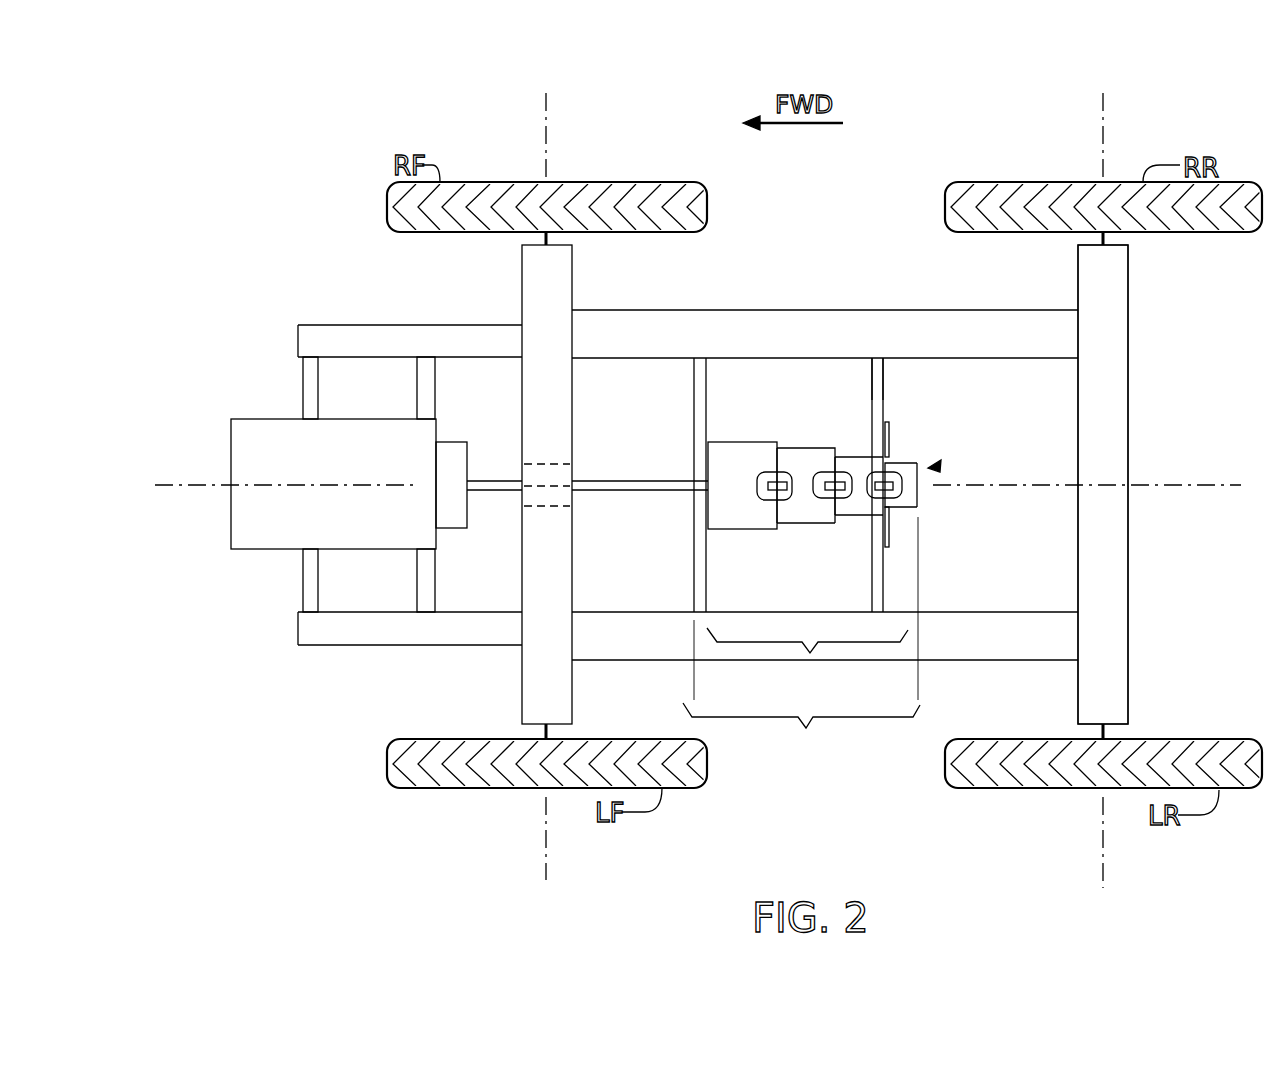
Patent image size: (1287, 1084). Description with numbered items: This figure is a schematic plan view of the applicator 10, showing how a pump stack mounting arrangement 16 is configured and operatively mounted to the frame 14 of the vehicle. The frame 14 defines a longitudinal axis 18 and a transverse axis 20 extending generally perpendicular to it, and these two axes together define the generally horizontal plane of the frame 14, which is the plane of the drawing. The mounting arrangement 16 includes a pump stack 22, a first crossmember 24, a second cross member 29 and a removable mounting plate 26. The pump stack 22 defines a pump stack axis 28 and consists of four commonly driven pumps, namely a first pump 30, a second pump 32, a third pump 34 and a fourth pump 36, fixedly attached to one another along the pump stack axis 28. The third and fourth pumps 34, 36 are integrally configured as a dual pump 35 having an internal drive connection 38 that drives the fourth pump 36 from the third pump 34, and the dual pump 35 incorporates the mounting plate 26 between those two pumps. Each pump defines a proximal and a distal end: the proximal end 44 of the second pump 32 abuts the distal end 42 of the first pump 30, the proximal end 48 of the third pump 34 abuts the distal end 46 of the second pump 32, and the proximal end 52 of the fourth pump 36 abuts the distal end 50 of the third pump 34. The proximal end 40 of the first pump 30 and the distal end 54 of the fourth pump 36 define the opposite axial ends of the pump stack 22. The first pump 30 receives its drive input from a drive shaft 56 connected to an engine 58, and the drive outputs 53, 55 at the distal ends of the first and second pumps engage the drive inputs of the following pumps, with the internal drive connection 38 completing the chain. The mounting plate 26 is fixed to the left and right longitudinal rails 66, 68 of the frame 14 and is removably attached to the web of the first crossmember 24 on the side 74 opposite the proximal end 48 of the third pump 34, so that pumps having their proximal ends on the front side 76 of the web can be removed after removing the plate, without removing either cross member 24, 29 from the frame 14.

The applicator 10 is at (953, 104).
The frame 14 is at (1111, 408).
The pump stack mounting arrangement 16 is at (801, 639).
The longitudinal axis 18 is at (195, 485).
The transverse axis 20 is at (1105, 839).
The pump stack 22 is at (812, 653).
The first crossmember 24 is at (878, 592).
The removable mounting plate 26 is at (888, 505).
The pump stack axis 28 is at (1037, 483).
The second cross member 29 is at (700, 548).
The first pump 30 is at (728, 532).
The second pump 32 is at (823, 455).
The third pump 34 is at (857, 517).
The dual pump 35 is at (938, 465).
The fourth pump 36 is at (903, 497).
The internal drive connection 38 is at (898, 467).
The proximal end of first pump 40 is at (703, 461).
The distal end of first pump 42 is at (780, 470).
The proximal end of second pump 44 is at (777, 460).
The distal end of second pump 46 is at (837, 465).
The proximal end of third pump 48 is at (810, 553).
The distal end of third pump 50 is at (893, 460).
The proximal end of fourth pump 52 is at (877, 497).
The drive output of first pump 53 is at (752, 503).
The distal end of fourth pump 54 is at (918, 492).
The drive output of second pump 55 is at (807, 497).
The drive shaft 56 is at (672, 485).
The engine 58 is at (265, 535).
The left longitudinal rail 66 is at (1045, 612).
The right longitudinal rail 68 is at (1005, 328).
The opposite side of web 74 is at (887, 382).
The front side of web 76 is at (870, 382).